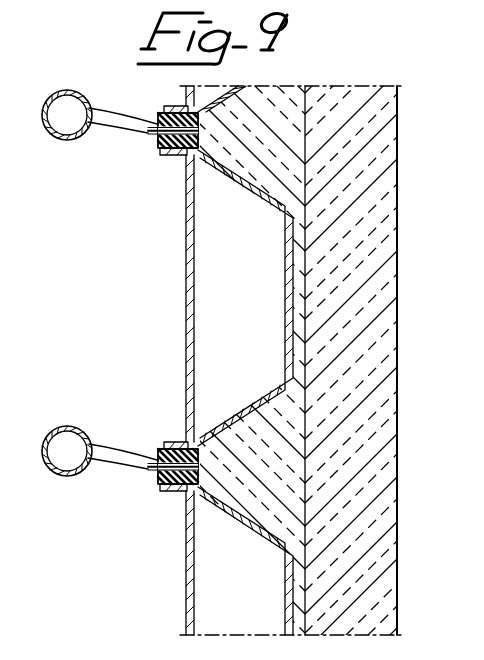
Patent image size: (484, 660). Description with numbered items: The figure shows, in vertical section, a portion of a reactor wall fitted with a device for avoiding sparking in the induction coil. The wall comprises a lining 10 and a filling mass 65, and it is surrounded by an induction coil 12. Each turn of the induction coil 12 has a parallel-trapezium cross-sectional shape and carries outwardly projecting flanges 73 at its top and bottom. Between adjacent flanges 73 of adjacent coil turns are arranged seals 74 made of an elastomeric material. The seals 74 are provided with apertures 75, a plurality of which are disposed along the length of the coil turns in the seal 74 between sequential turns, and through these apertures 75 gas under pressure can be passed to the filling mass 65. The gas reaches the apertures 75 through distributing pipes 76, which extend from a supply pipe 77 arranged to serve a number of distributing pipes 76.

The lining 10 is at (345, 103).
The induction coil 12 is at (186, 297).
The filling mass 65 is at (268, 95).
The flanges 73 is at (172, 106).
The seals 74 is at (160, 150).
The apertures 75 is at (158, 118).
The distributing pipes 76 is at (118, 133).
The supply pipe 77 is at (61, 91).